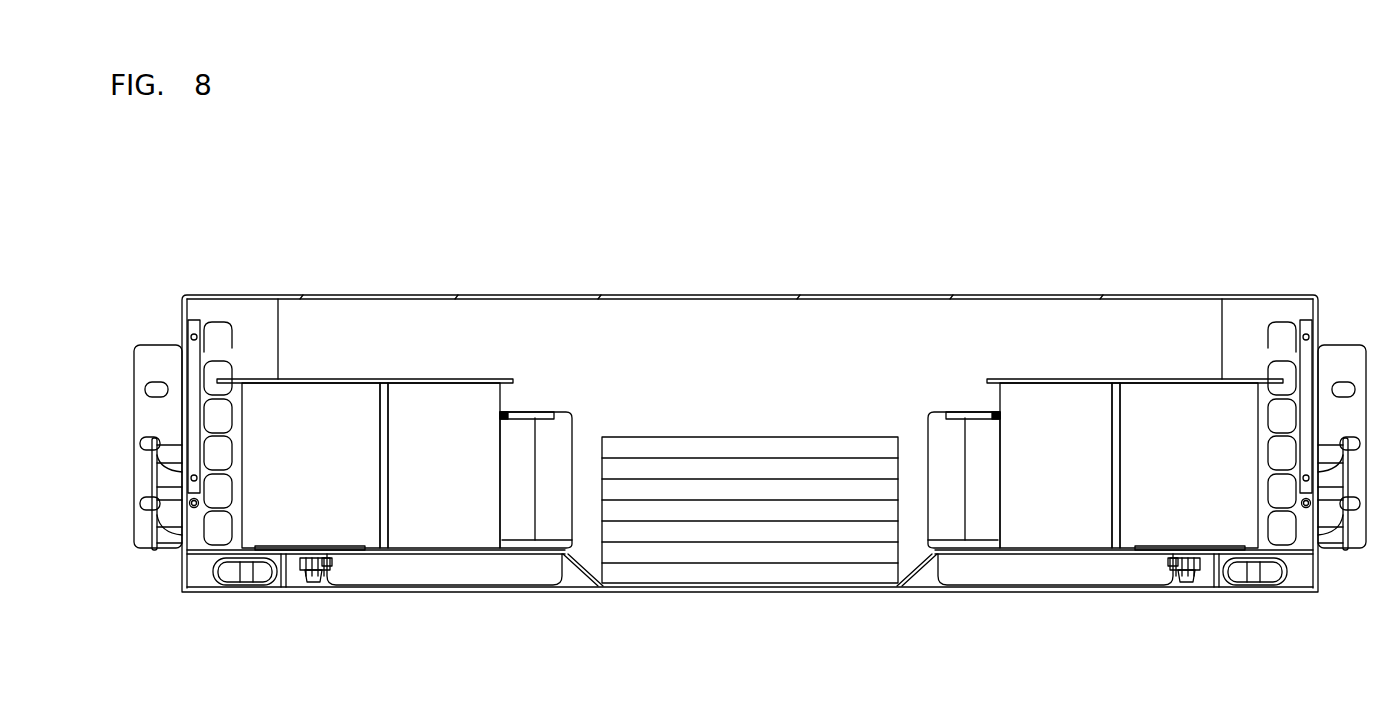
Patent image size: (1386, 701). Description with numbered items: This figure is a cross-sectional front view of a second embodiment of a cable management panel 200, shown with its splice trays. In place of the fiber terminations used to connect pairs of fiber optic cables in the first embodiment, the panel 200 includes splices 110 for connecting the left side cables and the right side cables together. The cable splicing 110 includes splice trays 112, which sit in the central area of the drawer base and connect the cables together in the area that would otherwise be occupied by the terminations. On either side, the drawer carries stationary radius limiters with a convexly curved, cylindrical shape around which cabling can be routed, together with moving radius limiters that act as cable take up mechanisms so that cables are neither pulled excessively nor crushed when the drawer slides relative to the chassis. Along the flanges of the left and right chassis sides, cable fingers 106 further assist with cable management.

The panel 200 is at (647, 232).
The cable fingers 106 is at (1278, 322).
The splices 110 is at (745, 400).
The splice trays 112 is at (683, 551).